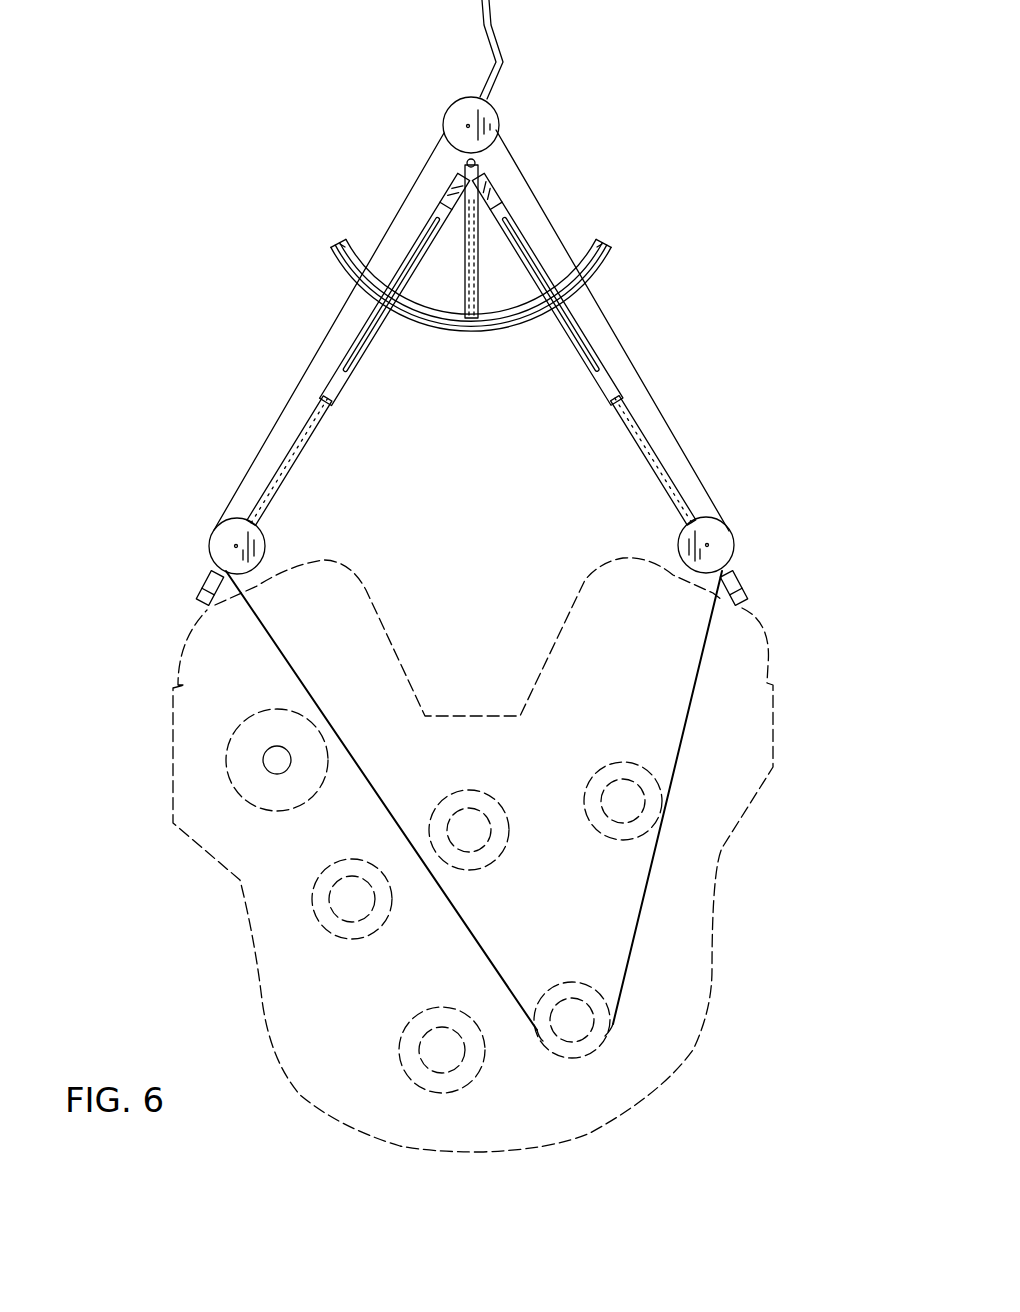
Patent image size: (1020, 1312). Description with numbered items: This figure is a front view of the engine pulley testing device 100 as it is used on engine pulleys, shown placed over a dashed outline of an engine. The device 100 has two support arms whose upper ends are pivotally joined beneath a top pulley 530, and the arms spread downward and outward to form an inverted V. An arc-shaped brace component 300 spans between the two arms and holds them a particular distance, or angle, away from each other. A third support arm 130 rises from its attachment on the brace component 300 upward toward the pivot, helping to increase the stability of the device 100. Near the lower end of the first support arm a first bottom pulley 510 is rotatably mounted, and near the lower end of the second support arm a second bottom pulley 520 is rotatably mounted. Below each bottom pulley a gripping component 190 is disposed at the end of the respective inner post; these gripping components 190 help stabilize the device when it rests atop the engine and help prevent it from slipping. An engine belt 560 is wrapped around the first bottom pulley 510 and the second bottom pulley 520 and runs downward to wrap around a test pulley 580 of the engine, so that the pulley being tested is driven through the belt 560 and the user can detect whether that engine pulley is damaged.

The engine pulley testing device 100 is at (687, 175).
The third support arm 130 is at (478, 286).
The gripping component 190 is at (197, 590).
The brace component 300 is at (430, 325).
The first bottom pulley 510 is at (265, 533).
The second bottom pulley 520 is at (728, 530).
The top pulley 530 is at (499, 114).
The engine belt 560 is at (703, 670).
The test pulley 580 is at (605, 1040).